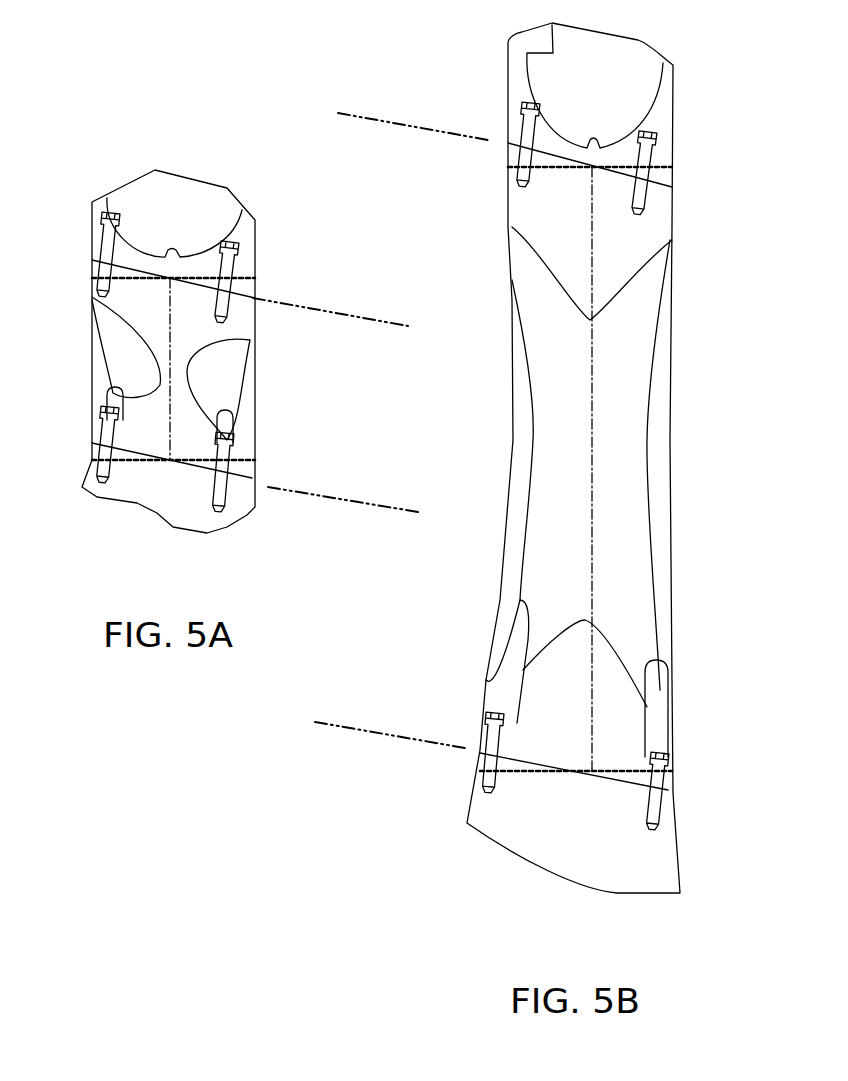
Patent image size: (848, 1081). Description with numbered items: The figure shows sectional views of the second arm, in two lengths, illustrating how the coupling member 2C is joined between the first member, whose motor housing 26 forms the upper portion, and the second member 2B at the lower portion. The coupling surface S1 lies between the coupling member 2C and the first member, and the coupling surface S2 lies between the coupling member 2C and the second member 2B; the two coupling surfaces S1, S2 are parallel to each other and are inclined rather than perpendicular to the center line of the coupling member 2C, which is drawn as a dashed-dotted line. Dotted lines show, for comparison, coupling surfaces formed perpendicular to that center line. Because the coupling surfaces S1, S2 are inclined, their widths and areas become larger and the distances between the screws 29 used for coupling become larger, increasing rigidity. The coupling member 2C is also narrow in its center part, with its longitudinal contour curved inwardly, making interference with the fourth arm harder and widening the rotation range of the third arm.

In FIG. 5A, the motor housing 26 is at (257, 220).
In FIG. 5B, the motor housing 26 is at (673, 105).
In FIG. 5A, the screws 29 is at (107, 243).
In FIG. 5B, the screws 29 is at (528, 128).
In FIG. 5A, the coupling member 2C is at (250, 363).
In FIG. 5B, the coupling member 2C is at (672, 238).
In FIG. 5A, the second member 2B is at (250, 502).
In FIG. 5B, the second member 2B is at (675, 830).
In FIG. 5A, the coupling surface S1 is at (327, 308).
In FIG. 5B, the coupling surface S1 is at (407, 123).
In FIG. 5A, the coupling surface S2 is at (308, 493).
In FIG. 5B, the coupling surface S2 is at (357, 727).